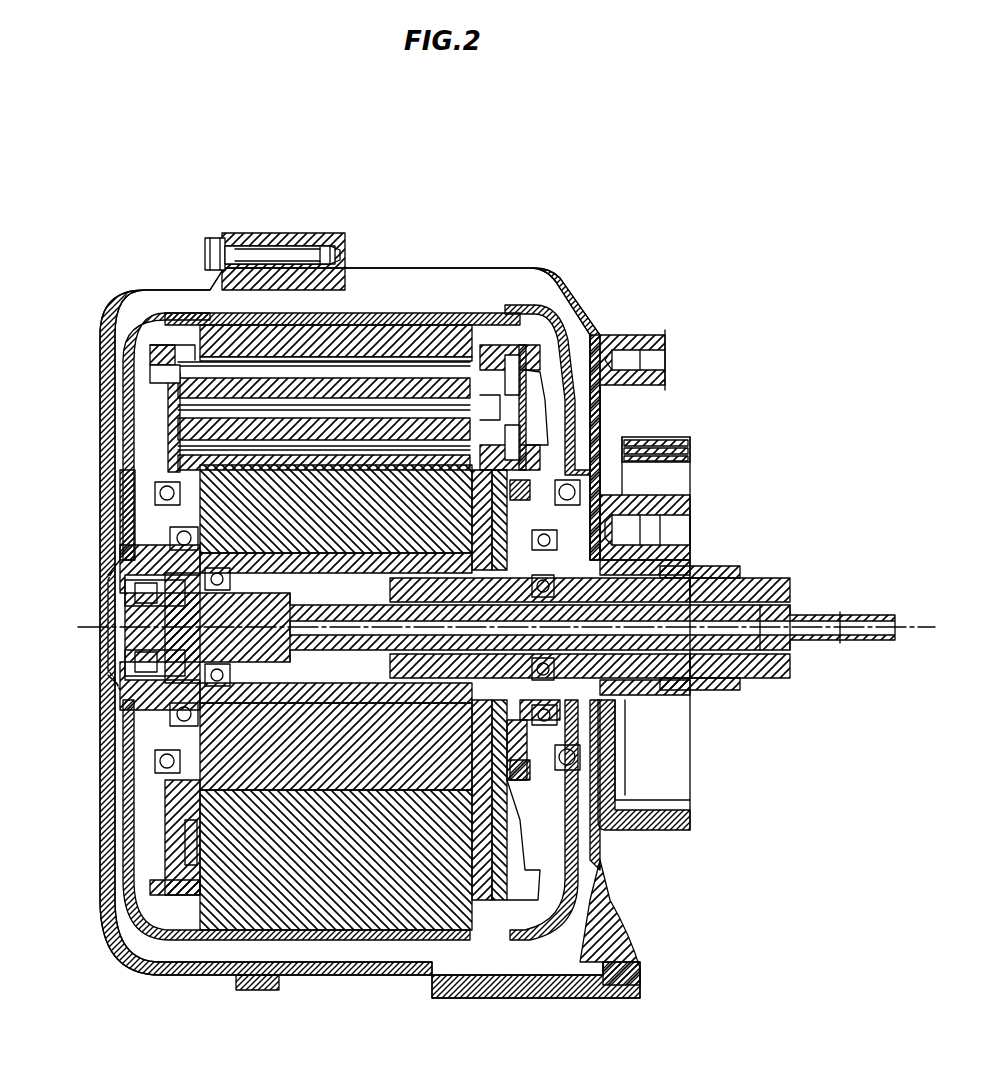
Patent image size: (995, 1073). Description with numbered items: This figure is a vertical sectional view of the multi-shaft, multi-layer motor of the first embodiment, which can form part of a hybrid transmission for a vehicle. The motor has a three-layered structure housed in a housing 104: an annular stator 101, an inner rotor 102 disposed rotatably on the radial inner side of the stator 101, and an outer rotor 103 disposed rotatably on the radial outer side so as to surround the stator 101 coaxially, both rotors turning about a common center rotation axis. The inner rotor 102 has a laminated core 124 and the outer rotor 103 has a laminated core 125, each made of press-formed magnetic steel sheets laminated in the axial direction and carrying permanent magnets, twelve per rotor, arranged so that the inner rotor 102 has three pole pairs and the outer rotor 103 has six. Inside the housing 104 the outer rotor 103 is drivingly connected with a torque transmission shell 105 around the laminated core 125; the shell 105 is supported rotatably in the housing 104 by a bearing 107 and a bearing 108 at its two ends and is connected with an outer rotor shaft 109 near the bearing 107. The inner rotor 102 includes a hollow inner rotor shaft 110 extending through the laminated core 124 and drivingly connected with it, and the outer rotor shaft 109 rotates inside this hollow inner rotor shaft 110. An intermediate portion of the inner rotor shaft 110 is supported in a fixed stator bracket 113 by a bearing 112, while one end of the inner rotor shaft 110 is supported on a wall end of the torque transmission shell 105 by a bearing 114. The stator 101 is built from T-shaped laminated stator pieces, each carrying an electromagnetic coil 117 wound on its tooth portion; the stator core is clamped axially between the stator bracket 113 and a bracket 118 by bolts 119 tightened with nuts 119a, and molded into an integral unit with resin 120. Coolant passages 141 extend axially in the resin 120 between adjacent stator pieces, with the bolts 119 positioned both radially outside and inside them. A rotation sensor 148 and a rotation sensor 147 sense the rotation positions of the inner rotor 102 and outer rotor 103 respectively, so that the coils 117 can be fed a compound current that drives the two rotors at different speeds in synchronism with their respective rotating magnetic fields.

The stator 101 is at (424, 342).
The inner rotor 102 is at (340, 795).
The outer rotor 103 is at (368, 305).
The housing 104 is at (574, 298).
The torque transmission shell 105 is at (490, 347).
The bearing 107 is at (137, 537).
The bearing 108 is at (600, 480).
The outer rotor shaft 109 is at (868, 688).
The inner rotor shaft 110 is at (640, 667).
The bearing 112 is at (627, 555).
The stator bracket 113 is at (537, 308).
The bearing 114 is at (183, 567).
The electromagnetic coil 117 is at (193, 897).
The bracket 118 is at (160, 352).
The bolt 119 is at (290, 447).
The nut 119a is at (175, 450).
The resin 120 is at (120, 302).
The laminated core 124 is at (512, 905).
The laminated core 125 is at (403, 320).
The coolant passage 141 is at (233, 417).
The rotation sensor 147 is at (105, 676).
The rotation sensor 148 is at (520, 830).